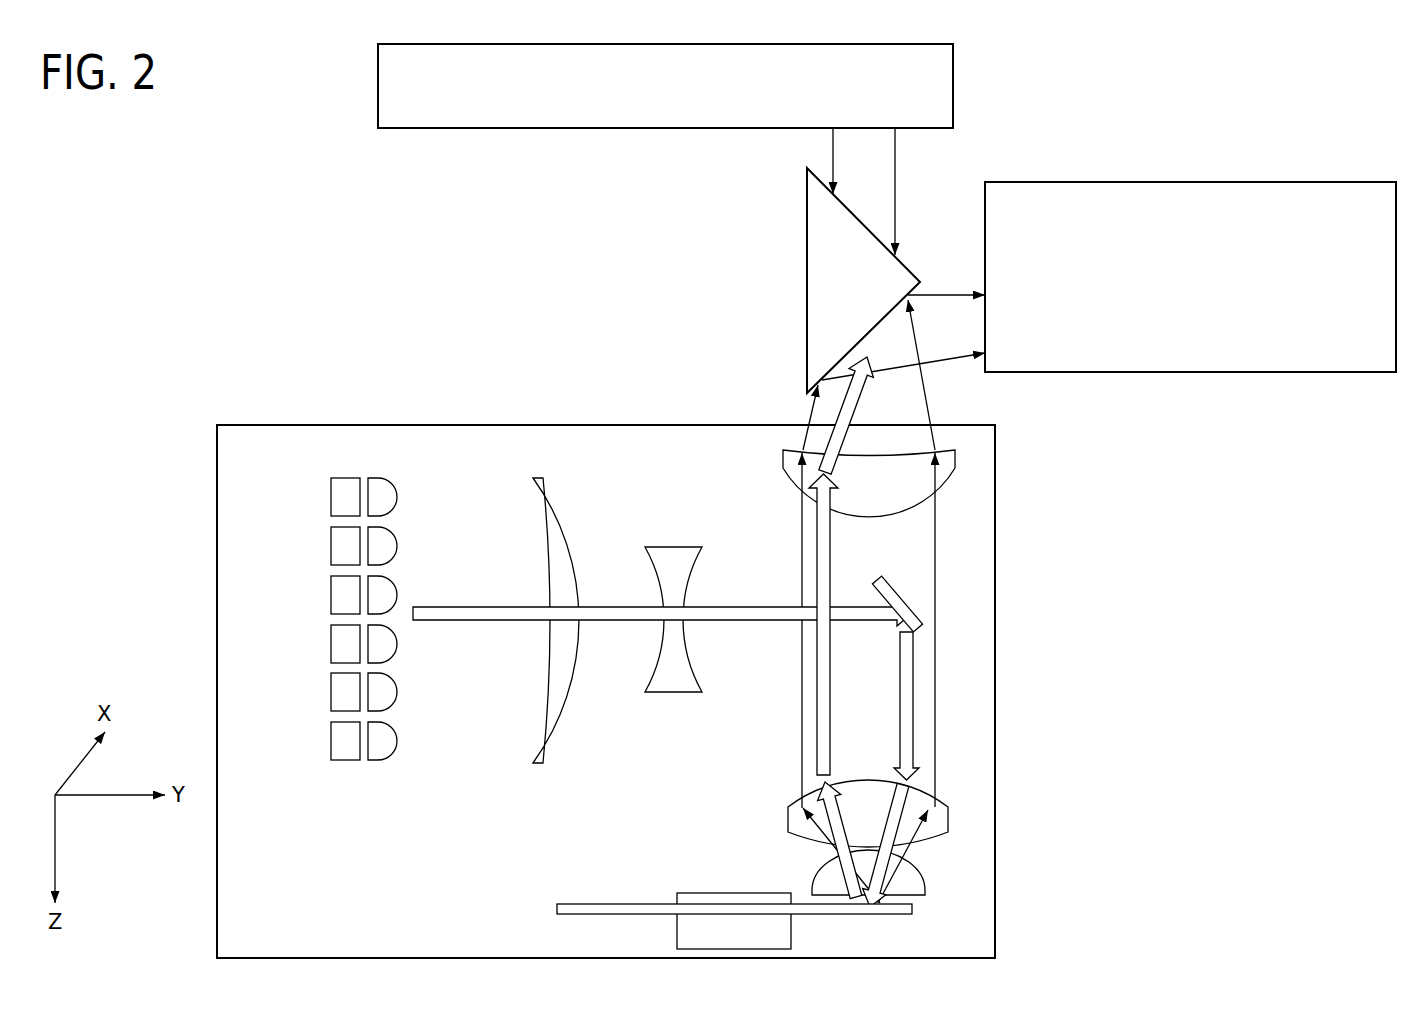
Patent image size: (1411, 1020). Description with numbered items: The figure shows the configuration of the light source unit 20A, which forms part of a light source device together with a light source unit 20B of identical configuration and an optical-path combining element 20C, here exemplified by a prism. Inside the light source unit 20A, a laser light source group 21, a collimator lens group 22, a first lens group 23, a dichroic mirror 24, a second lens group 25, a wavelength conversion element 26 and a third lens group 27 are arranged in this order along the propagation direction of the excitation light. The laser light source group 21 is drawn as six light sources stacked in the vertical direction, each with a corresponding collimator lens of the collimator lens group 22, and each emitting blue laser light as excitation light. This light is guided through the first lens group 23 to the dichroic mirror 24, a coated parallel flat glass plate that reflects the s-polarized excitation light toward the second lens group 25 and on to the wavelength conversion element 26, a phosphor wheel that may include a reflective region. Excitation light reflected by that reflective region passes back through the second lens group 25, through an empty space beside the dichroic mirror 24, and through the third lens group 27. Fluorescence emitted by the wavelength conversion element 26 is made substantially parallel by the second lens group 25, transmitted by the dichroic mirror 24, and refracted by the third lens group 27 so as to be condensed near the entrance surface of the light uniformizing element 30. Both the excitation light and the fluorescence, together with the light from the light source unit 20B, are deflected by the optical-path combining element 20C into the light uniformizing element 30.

The light source unit 20A is at (390, 423).
The light source unit 20B is at (500, 131).
The optical-path combining element 20C is at (807, 353).
The laser light source group 21 is at (318, 478).
The collimator lens group 22 is at (395, 478).
The first lens group 23 is at (693, 468).
The dichroic mirror 24 is at (920, 605).
The second lens group 25 is at (987, 780).
The wavelength conversion element 26 is at (557, 907).
The third lens group 27 is at (955, 455).
The light uniformizing element 30 is at (1264, 181).